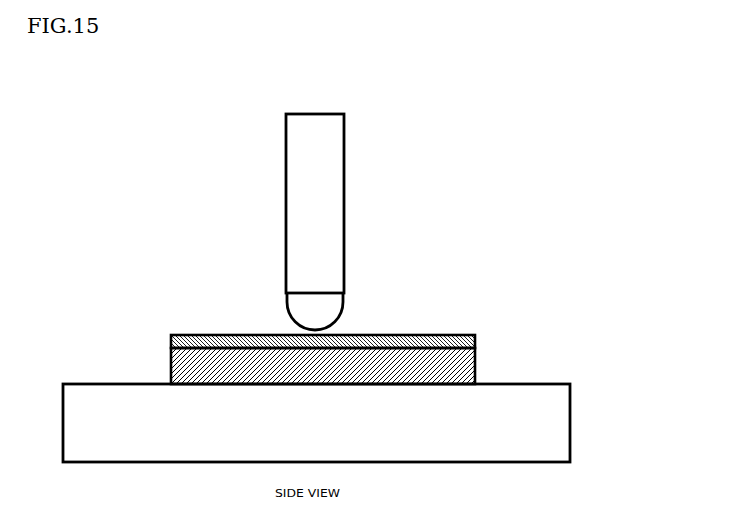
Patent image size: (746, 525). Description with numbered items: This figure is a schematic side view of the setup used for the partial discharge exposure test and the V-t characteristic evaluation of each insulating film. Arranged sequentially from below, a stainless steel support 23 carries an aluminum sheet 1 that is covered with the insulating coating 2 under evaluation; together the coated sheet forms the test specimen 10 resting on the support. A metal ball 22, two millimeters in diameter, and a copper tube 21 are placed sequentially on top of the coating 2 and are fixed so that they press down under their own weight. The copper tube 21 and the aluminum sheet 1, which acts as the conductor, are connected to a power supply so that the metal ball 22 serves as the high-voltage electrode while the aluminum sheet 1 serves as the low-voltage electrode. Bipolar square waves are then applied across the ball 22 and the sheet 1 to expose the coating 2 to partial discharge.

The aluminum sheet 1 is at (478, 369).
The insulating coating 2 is at (478, 340).
The laminate 10 is at (463, 319).
The copper tube 21 is at (345, 277).
The metal ball 22 is at (343, 305).
The stainless steel support 23 is at (316, 423).